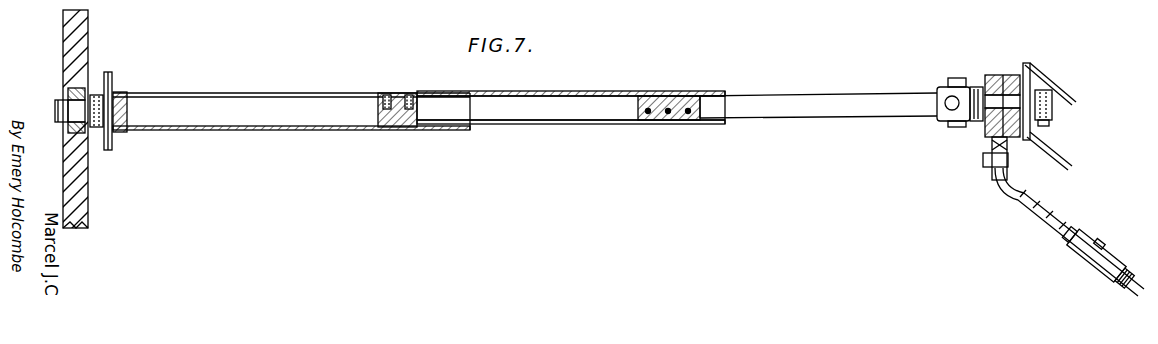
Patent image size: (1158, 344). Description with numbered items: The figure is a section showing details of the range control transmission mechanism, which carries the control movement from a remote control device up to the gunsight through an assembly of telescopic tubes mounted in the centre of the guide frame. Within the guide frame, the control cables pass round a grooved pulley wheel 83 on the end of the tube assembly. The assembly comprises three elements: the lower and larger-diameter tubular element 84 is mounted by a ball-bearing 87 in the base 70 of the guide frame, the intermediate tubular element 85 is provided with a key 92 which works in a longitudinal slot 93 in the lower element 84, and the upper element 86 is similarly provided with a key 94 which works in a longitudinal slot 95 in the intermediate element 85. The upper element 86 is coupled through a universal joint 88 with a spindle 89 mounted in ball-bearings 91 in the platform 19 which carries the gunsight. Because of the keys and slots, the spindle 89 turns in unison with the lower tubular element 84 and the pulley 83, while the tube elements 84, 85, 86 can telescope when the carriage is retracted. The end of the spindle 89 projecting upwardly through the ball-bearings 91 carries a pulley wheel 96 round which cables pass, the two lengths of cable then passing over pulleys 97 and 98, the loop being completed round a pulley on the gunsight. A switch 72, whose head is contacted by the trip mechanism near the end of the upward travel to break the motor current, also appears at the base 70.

The base 70 is at (88, 177).
The switch 72 is at (466, 5).
The ball-bearing 87 is at (85, 90).
The grooved pulley wheel 83 is at (107, 148).
The lower tubular element 84 is at (284, 130).
The longitudinal slot 93 is at (312, 93).
The key 92 is at (408, 93).
The intermediate tubular element 85 is at (558, 92).
The longitudinal slot 95 is at (565, 124).
The key 94 is at (668, 121).
The upper tubular element 86 is at (856, 118).
The universal joint 88 is at (950, 123).
The ball-bearings 91 is at (992, 80).
The spindle 89 is at (1005, 100).
The pulley 97 is at (1052, 82).
The pulley wheel 96 is at (1043, 124).
The pulley 98 is at (1062, 160).
The platform 19 is at (1000, 190).